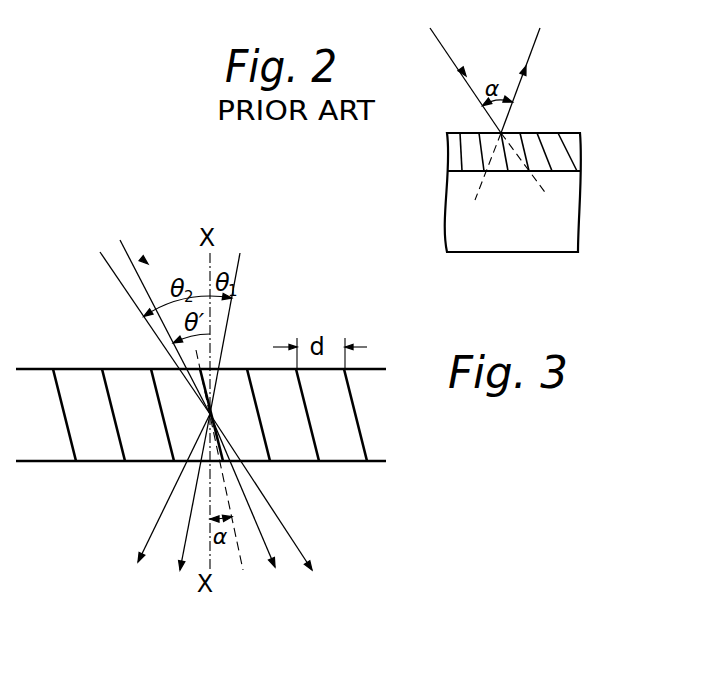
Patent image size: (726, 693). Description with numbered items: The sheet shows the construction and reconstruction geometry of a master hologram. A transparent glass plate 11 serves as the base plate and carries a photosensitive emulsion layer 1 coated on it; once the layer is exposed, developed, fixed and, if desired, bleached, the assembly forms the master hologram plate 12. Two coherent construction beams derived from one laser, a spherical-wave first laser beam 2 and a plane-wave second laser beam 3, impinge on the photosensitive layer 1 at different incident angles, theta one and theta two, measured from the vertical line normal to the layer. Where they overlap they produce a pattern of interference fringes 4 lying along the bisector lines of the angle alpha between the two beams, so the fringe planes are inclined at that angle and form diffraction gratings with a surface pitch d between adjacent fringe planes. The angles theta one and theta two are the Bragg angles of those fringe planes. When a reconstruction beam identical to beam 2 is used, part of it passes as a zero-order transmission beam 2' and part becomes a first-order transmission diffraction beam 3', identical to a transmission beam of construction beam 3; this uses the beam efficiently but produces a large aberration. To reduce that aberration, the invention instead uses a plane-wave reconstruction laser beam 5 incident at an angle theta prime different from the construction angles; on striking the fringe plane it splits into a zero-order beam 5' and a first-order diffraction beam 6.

In FIG. 2, the photosensitive emulsion layer 1 is at (378, 462).
In FIG. 3, the photosensitive emulsion layer 1 is at (581, 145).
In FIG. 2, the first laser beam 2 is at (243, 333).
In FIG. 3, the first laser beam 2 is at (537, 80).
In FIG. 2, the second laser beam 3 is at (143, 333).
In FIG. 3, the second laser beam 3 is at (455, 80).
In FIG. 2, the interference fringes 4 is at (219, 457).
In FIG. 3, the interference fringes 4 is at (543, 143).
In FIG. 2, the reconstruction laser beam 5 is at (157, 313).
In FIG. 2, the first-order diffraction beam 6 is at (147, 541).
In FIG. 2, the zero-order transmission beam 2' is at (176, 504).
In FIG. 2, the first-order transmission diffraction beam 3' is at (270, 492).
In FIG. 2, the zero-order beam 5' is at (243, 508).
In FIG. 3, the transparent glass plate 11 is at (560, 252).
In FIG. 3, the master hologram plate 12 is at (584, 200).